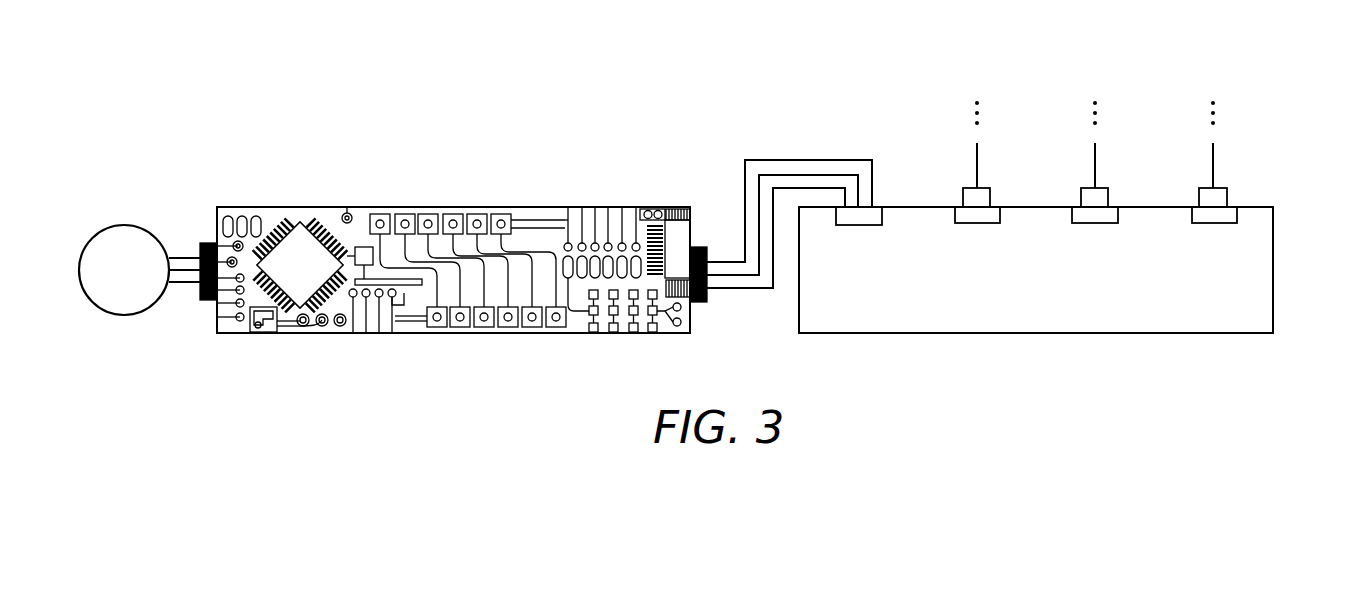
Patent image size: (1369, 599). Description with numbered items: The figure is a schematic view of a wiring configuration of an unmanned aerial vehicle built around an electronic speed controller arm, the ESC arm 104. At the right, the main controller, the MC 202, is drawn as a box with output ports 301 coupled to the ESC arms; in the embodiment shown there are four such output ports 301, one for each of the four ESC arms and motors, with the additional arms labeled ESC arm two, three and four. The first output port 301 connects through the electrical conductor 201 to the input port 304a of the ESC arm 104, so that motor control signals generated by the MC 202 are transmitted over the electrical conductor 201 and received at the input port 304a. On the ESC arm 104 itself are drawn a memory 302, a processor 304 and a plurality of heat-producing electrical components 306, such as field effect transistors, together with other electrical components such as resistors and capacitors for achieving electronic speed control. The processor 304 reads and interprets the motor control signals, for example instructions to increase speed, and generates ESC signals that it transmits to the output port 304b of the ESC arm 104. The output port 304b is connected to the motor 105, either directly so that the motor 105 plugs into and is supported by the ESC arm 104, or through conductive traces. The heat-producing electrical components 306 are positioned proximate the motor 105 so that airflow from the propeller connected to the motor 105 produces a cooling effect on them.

The motor 105 is at (124, 226).
The output port 304b is at (212, 243).
The heat-producing electrical components 306 is at (228, 215).
The processor 304 is at (292, 246).
The memory 302 is at (364, 247).
The ESC arm 104 is at (600, 207).
The input port 304a is at (696, 247).
The electrical conductor 201 is at (813, 150).
The output ports 301 is at (856, 226).
The MC 202 is at (1273, 262).